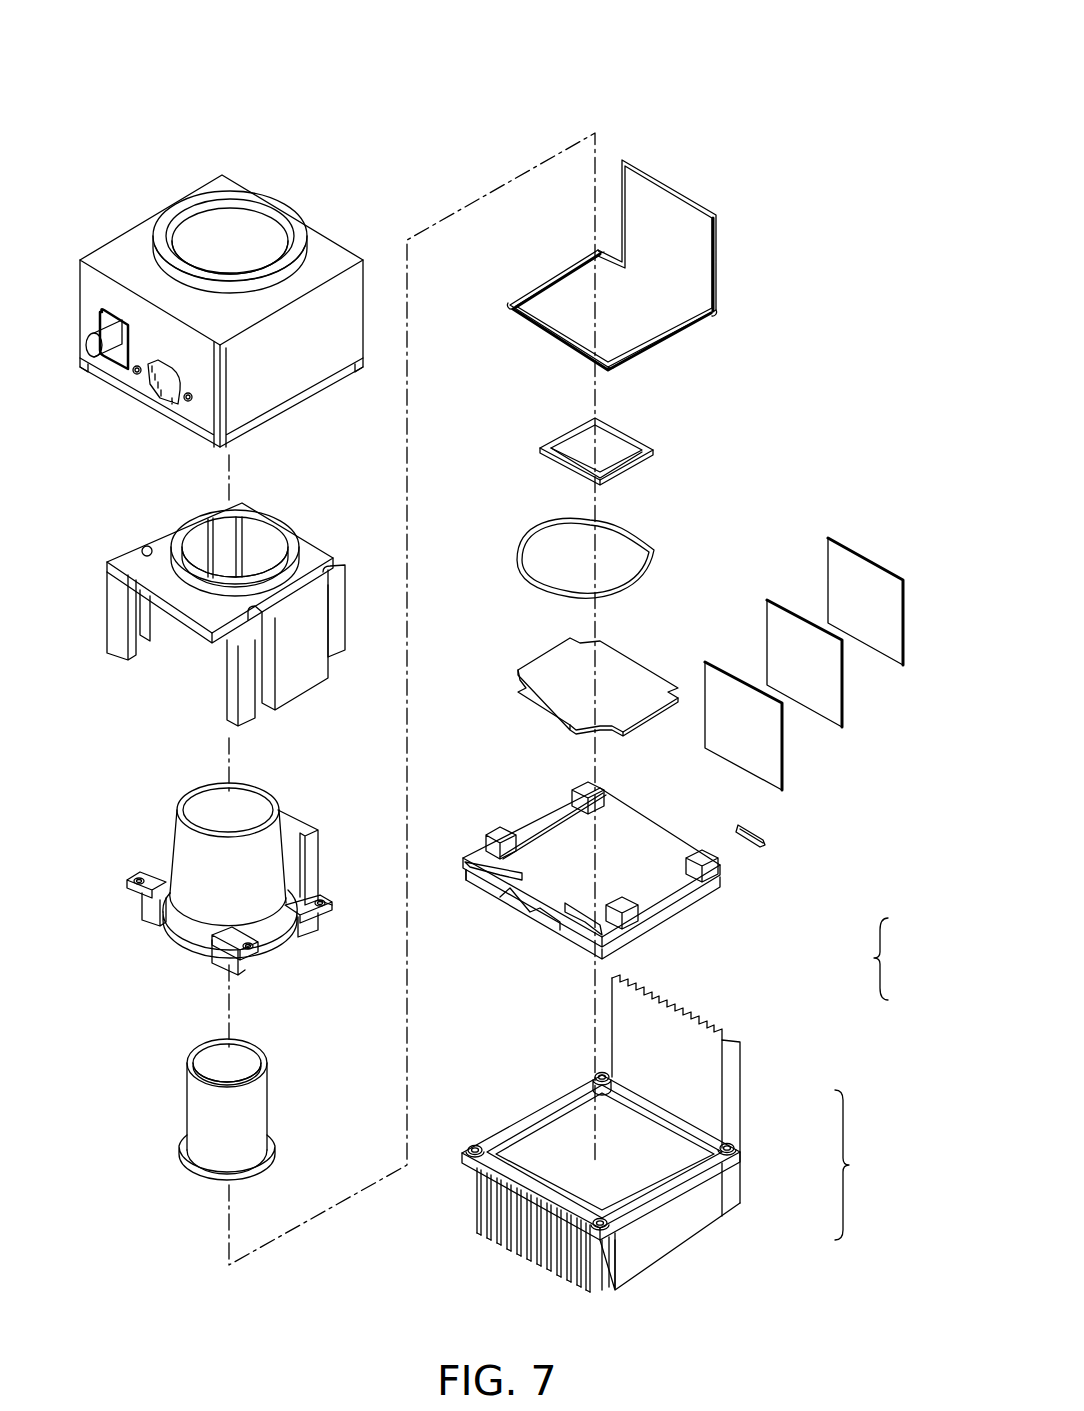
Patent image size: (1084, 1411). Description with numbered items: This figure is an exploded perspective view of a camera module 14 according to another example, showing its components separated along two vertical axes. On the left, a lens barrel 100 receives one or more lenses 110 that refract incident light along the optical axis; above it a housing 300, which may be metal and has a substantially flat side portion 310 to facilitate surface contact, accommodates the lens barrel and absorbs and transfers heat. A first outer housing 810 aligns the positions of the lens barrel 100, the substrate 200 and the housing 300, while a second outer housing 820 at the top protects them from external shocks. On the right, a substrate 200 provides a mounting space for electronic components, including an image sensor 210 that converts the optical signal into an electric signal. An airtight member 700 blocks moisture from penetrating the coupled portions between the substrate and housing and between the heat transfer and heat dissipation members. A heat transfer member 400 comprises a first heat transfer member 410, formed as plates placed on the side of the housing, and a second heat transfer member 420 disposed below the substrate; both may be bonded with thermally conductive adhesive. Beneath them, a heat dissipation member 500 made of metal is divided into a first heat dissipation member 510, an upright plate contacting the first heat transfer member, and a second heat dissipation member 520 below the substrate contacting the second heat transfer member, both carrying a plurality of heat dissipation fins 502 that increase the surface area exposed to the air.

The camera module 14 is at (727, 147).
The second outer housing 820 is at (150, 245).
The first outer housing 810 is at (142, 558).
The housing 300 is at (155, 880).
The holder bracket portion 310 is at (314, 836).
The lens barrel 100 is at (200, 1108).
The lens 110 is at (248, 1055).
The airtight member 700 is at (653, 563).
The image sensor 210 is at (632, 445).
The substrate 200 is at (540, 668).
The second heat transfer member 420 is at (540, 850).
The first heat transfer member 410 is at (890, 645).
The heat transfer member 400 is at (881, 959).
The heat dissipation member 500 is at (653, 1116).
The first heat dissipation member 510 is at (738, 1108).
The second heat dissipation member 520 is at (718, 1237).
The heat dissipation fins 502 is at (677, 1003).